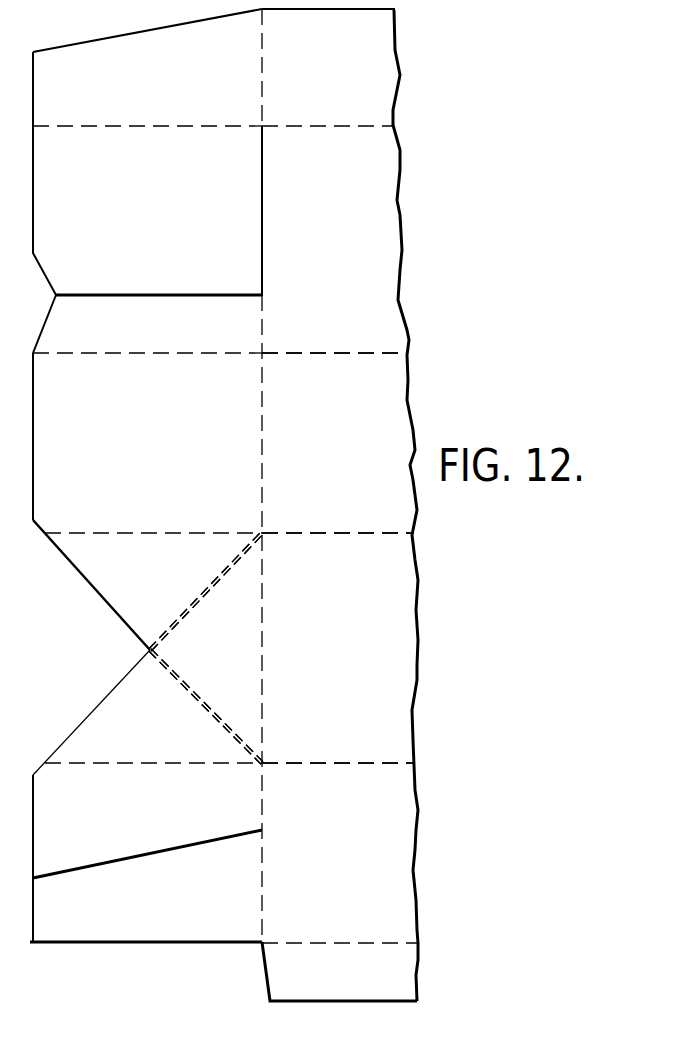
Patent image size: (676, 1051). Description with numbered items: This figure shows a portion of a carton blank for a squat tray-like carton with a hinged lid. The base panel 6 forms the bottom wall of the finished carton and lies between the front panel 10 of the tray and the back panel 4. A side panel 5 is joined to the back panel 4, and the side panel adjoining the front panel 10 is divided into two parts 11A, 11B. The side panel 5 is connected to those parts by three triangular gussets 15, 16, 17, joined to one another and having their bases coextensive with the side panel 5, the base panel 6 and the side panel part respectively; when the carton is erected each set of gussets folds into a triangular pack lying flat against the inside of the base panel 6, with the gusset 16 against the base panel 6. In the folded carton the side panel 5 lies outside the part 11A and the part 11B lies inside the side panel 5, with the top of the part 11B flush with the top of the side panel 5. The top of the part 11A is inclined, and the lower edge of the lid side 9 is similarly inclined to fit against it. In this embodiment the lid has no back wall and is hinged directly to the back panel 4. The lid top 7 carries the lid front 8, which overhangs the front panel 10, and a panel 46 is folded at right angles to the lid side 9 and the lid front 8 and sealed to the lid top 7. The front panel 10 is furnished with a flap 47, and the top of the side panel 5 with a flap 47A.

The back panel 4 is at (358, 469).
The side panel 5 is at (160, 466).
The base panel 6 is at (348, 646).
The lid top 7 is at (350, 226).
The lid front 8 is at (351, 94).
The lid side 9 is at (160, 94).
The front panel 10 is at (336, 876).
The side panel part 11A is at (143, 824).
The side panel part 11B is at (145, 914).
The triangular gusset 15 is at (133, 589).
The triangular gusset 16 is at (204, 657).
The triangular gusset 17 is at (138, 739).
The panel 46 is at (136, 226).
The flap 47 is at (329, 986).
The flap 47A is at (136, 339).